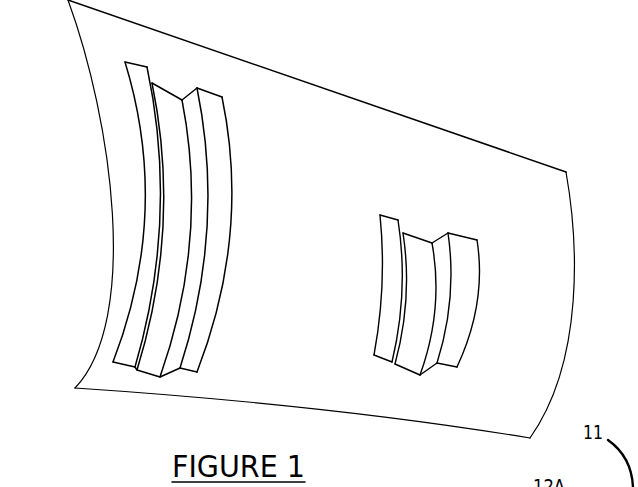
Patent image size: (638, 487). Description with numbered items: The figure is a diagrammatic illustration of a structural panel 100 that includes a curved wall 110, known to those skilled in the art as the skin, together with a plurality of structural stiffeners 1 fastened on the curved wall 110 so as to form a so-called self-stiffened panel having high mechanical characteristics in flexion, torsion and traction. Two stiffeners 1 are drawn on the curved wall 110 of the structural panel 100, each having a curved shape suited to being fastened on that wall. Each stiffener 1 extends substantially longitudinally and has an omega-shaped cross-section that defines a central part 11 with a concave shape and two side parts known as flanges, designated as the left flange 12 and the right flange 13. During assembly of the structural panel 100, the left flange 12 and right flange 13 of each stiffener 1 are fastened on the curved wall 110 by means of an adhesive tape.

The structural panel 100 is at (307, 219).
The curved wall 110 is at (118, 288).
The structural stiffener 1 is at (240, 241).
The central part 11 is at (420, 248).
The left flange 12 is at (388, 290).
The right flange 13 is at (463, 302).